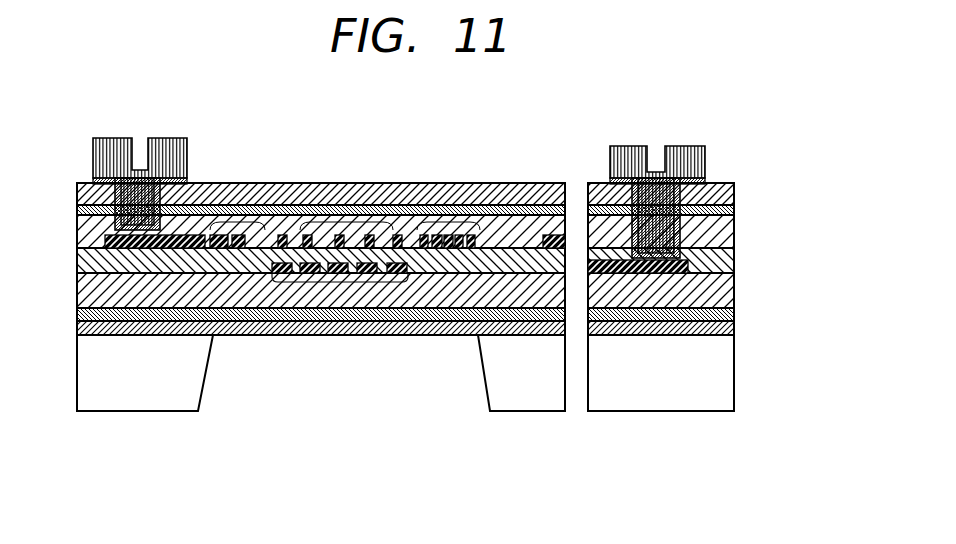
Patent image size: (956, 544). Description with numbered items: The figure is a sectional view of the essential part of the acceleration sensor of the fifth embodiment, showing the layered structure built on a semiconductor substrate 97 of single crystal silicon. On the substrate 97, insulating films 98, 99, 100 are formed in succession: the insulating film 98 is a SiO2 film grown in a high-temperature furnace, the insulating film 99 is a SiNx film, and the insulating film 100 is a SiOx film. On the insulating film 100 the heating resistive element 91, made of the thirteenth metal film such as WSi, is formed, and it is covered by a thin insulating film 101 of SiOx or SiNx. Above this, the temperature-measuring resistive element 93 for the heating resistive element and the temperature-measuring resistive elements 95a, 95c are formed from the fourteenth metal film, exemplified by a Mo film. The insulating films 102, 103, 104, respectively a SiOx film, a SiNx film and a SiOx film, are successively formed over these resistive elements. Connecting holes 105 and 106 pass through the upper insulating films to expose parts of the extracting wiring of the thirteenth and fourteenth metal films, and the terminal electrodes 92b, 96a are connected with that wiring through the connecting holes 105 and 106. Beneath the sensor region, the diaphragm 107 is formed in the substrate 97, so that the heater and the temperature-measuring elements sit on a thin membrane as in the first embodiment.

The heating resistive element 91 is at (341, 280).
The temperature-measuring resistive element for the heating resistive element 93 is at (347, 230).
The temperature-measuring resistive element 95a is at (240, 228).
The temperature-measuring resistive element 95c is at (452, 230).
The terminal electrode 96a is at (112, 146).
The terminal electrode 92b is at (705, 152).
The semiconductor substrate 97 is at (645, 398).
The insulating film 98 is at (663, 328).
The insulating film 99 is at (735, 315).
The insulating film 100 is at (735, 285).
The insulating film 101 is at (735, 255).
The insulating film 102 is at (735, 219).
The insulating film 103 is at (523, 214).
The insulating film 104 is at (735, 190).
The connecting hole 105 is at (660, 205).
The connecting hole 106 is at (131, 195).
The diaphragm 107 is at (530, 398).